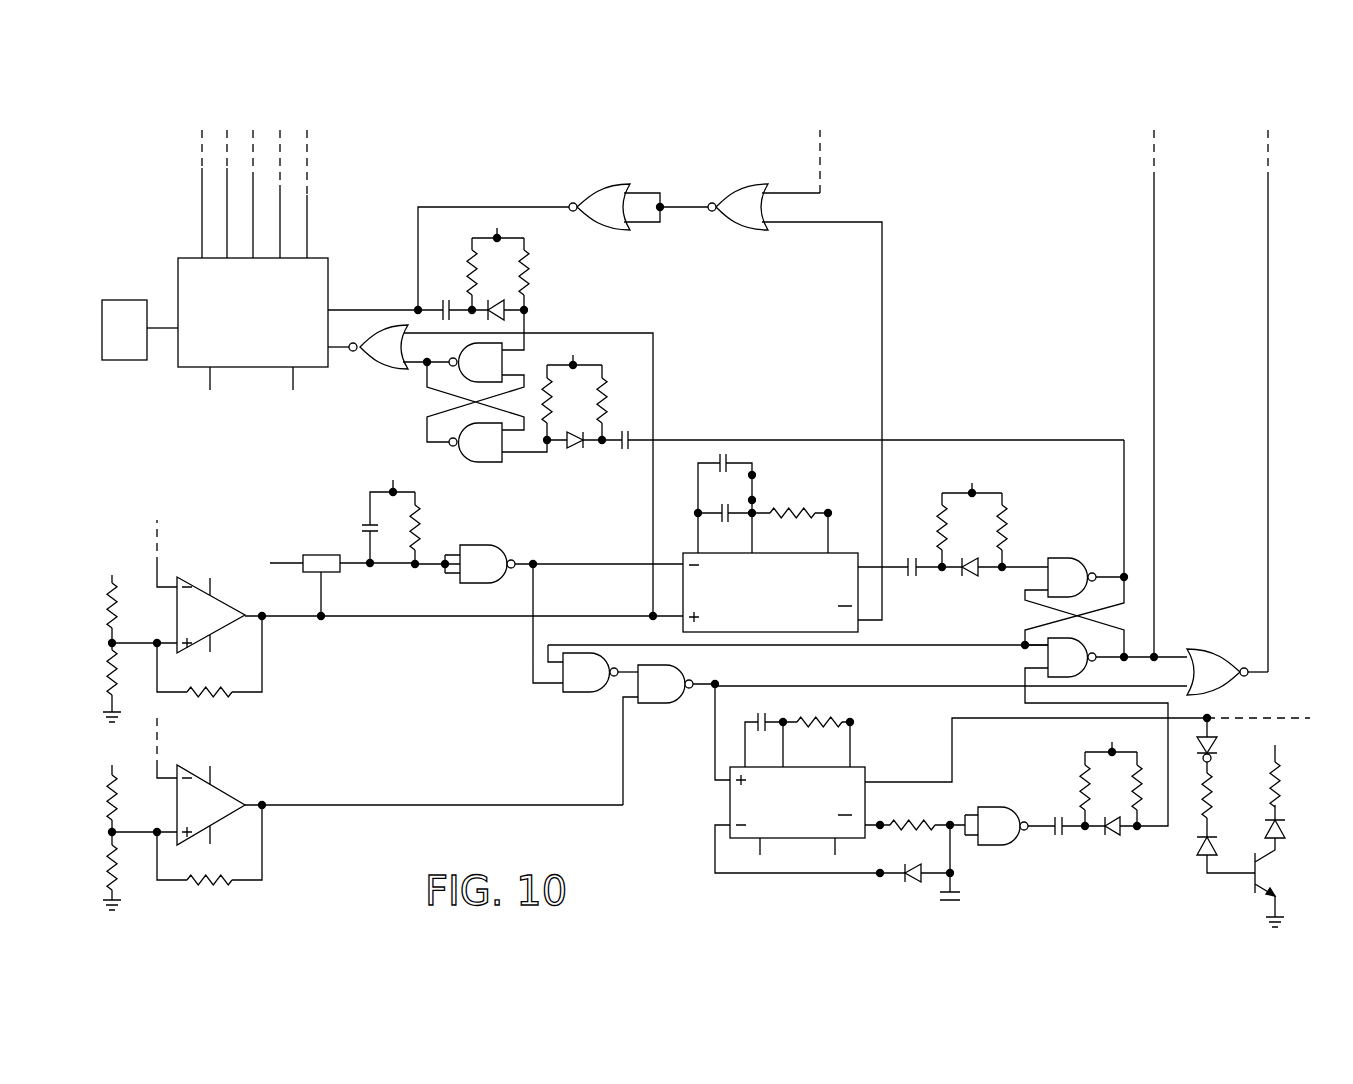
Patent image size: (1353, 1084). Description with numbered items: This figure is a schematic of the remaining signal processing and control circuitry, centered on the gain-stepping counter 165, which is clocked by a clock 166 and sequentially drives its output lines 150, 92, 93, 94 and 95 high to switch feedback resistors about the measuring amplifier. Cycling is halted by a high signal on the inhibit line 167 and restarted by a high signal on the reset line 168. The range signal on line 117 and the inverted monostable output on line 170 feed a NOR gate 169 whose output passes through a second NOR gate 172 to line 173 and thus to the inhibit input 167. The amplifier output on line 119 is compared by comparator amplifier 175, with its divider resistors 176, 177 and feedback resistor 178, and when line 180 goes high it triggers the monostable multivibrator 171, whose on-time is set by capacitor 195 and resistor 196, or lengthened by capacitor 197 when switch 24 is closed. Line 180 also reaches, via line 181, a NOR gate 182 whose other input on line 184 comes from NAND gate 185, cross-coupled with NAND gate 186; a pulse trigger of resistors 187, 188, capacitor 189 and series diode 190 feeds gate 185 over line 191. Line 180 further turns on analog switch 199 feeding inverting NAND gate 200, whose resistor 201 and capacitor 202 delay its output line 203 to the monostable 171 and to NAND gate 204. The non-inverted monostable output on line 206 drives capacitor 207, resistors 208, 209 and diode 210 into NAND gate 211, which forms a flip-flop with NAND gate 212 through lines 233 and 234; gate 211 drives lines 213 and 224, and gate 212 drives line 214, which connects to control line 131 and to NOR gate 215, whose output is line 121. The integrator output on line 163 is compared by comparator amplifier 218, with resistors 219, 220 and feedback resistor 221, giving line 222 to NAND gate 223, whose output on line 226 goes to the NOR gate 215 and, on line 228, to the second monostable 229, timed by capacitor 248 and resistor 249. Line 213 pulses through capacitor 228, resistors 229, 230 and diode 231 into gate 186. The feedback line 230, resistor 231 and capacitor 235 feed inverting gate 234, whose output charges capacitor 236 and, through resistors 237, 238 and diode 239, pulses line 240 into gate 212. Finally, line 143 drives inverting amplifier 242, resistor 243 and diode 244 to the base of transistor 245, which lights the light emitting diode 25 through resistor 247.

The switch 24 is at (756, 493).
The light emitting diode 25 is at (1278, 818).
The line 92 is at (227, 218).
The line 93 is at (253, 197).
The line 94 is at (280, 195).
The line 95 is at (307, 213).
The line 117 is at (805, 190).
The line 119 is at (160, 533).
The line 121 is at (1268, 373).
The control line 131 is at (1156, 477).
The line 143 is at (1262, 715).
The line 150 is at (202, 237).
The line 163 is at (160, 733).
The counter 165 is at (178, 268).
The clock 166 is at (125, 360).
The line 167 is at (412, 308).
The line 168 is at (338, 350).
The NOR gate 169 is at (733, 188).
The line 170 is at (870, 220).
The monostable multivibrator 171 is at (742, 633).
The NOR gate 172 is at (590, 187).
The line 173 is at (535, 207).
The comparator amplifier 175 is at (225, 610).
The resistor 176 is at (118, 625).
The resistor 177 is at (107, 673).
The feedback resistor 178 is at (225, 697).
The line 180 is at (300, 622).
The line 181 is at (655, 432).
The NOR gate 182 is at (375, 325).
The line 184 is at (420, 366).
The NAND gate 185 is at (458, 347).
The NAND gate 186 is at (470, 462).
The resistor 187 is at (528, 282).
The resistor 188 is at (468, 262).
The capacitor 189 is at (442, 305).
The series diode 190 is at (500, 300).
The line 191 is at (527, 342).
The capacitor 195 is at (728, 520).
The resistor 196 is at (797, 505).
The capacitor 197 is at (728, 460).
The analog switch 199 is at (325, 555).
The inverting NAND gate 200 is at (488, 545).
The resistor 201 is at (420, 545).
The capacitor 202 is at (365, 520).
The output line 203 is at (585, 563).
The NAND gate 204 is at (580, 693).
The line 206 is at (930, 575).
The capacitor 207 is at (910, 560).
The resistor 208 is at (937, 520).
The resistor 209 is at (1005, 525).
The diode 210 is at (975, 578).
The NAND gate 211 is at (1068, 558).
The NAND gate 212 is at (1046, 648).
The line 213 is at (1063, 440).
The line 214 is at (1145, 655).
The NOR gate 215 is at (1215, 650).
The comparator amplifier 218 is at (228, 797).
The resistor 219 is at (118, 812).
The resistor 220 is at (118, 880).
The feedback resistor 221 is at (225, 883).
The output line 222 is at (325, 808).
The NAND gate 223 is at (658, 703).
The line 224 is at (833, 646).
The line 226 is at (920, 688).
The capacitor 228 is at (622, 448).
The resistor 229 is at (690, 828).
The resistor 230 is at (605, 420).
The series diode 231 is at (567, 448).
The line 233 is at (1126, 592).
The line 234 is at (1020, 607).
The capacitor 235 is at (955, 890).
The capacitor 236 is at (1053, 820).
The resistor 237 is at (1080, 780).
The resistor 238 is at (1145, 795).
The series diode 239 is at (1113, 838).
The line 240 is at (1025, 703).
The inverting amplifier 242 is at (1210, 735).
The resistor 243 is at (1213, 815).
The diode 244 is at (1200, 852).
The transistor 245 is at (1262, 886).
The resistor 247 is at (1272, 783).
The capacitor 248 is at (760, 719).
The resistor 249 is at (830, 719).